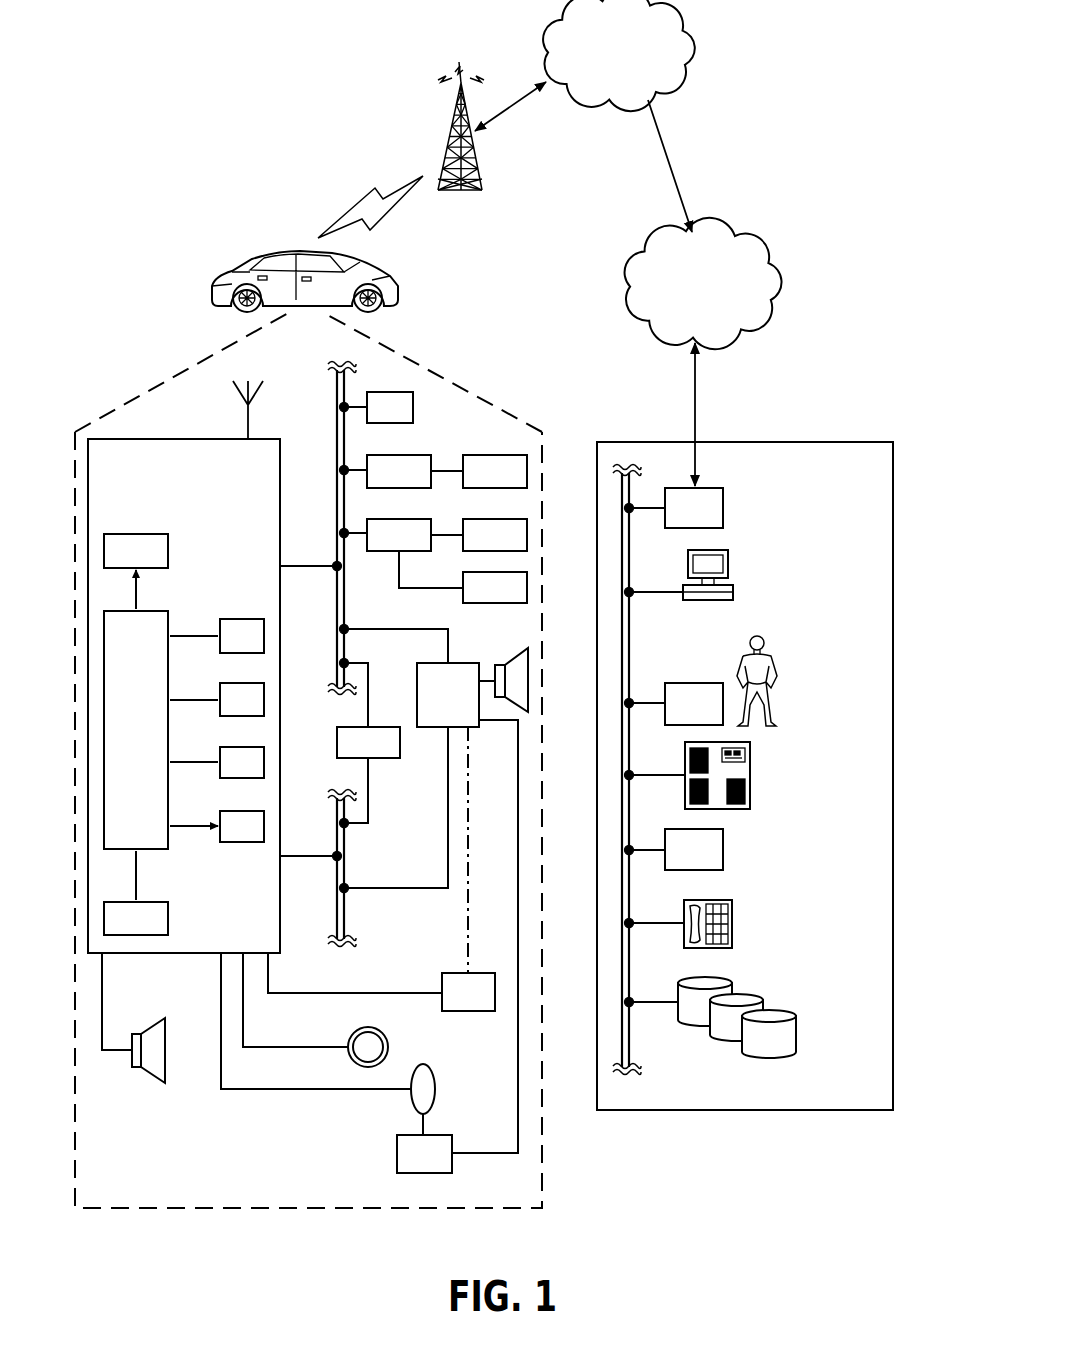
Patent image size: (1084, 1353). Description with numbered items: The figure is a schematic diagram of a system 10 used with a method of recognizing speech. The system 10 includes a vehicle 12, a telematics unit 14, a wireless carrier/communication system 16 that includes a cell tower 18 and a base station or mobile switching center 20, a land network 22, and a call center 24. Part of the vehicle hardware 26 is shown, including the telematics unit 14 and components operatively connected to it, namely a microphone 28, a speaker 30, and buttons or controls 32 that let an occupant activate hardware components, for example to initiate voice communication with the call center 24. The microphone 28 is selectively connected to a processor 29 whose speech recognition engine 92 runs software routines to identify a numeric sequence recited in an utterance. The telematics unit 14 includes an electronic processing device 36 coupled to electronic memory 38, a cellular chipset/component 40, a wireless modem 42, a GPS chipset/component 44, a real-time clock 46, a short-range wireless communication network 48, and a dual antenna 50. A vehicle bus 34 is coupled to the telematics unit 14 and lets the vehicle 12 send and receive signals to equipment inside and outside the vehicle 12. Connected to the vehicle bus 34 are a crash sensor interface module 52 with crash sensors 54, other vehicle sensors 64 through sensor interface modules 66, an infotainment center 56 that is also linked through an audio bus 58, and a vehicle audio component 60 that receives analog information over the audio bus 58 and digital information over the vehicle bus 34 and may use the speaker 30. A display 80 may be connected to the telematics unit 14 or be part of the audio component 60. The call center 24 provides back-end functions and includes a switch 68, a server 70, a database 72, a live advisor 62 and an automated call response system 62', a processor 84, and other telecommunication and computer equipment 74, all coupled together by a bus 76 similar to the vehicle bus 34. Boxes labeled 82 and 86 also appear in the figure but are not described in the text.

The system 10 is at (778, 100).
The vehicle 12 is at (298, 252).
The telematics unit 14 is at (281, 668).
The wireless carrier/communication system 16 is at (540, 116).
The cell tower 18 is at (448, 122).
The base station/mobile switching center 20 is at (624, 64).
The land network 22 is at (710, 303).
The call center 24 is at (745, 1111).
The vehicle hardware 26 is at (293, 1209).
The microphone 28 is at (436, 1088).
The processor 29 is at (415, 1167).
The speaker 30 is at (155, 1081).
The buttons, knobs, switches, keyboards, and/or controls 32 is at (389, 1046).
The vehicle bus 34 is at (345, 612).
The electronic processing device 36 is at (127, 739).
The electronic memory 38 is at (127, 932).
The cellular chipset/component 40 is at (127, 564).
The wireless modem 42 is at (233, 649).
The location detection (GPS) chipset/component 44 is at (233, 713).
The real-time clock 46 is at (233, 776).
The short-range wireless communication network 48 is at (233, 840).
The dual antenna 50 is at (250, 428).
The crash and/or collision sensor interface module 52 is at (390, 485).
The crash sensor 54 is at (486, 485).
The infotainment center 56 is at (359, 756).
The audio bus 58 is at (337, 873).
The vehicle audio component 60 is at (439, 708).
The live advisor 62 is at (787, 667).
The automated call response system 62' is at (757, 563).
The vehicle sensor 64 is at (486, 548).
The sensor interface module 66 is at (390, 548).
The switch 68 is at (685, 521).
The server 70 is at (752, 770).
The database 72 is at (798, 1035).
The telecommunication and computer equipment 74 is at (734, 923).
The bus 76 is at (630, 1036).
The display 80 is at (459, 1005).
The voice recognition system 82 is at (685, 863).
The processor 84 is at (685, 717).
The sensor 86 is at (486, 601).
The speech recognition engine 92 is at (381, 421).